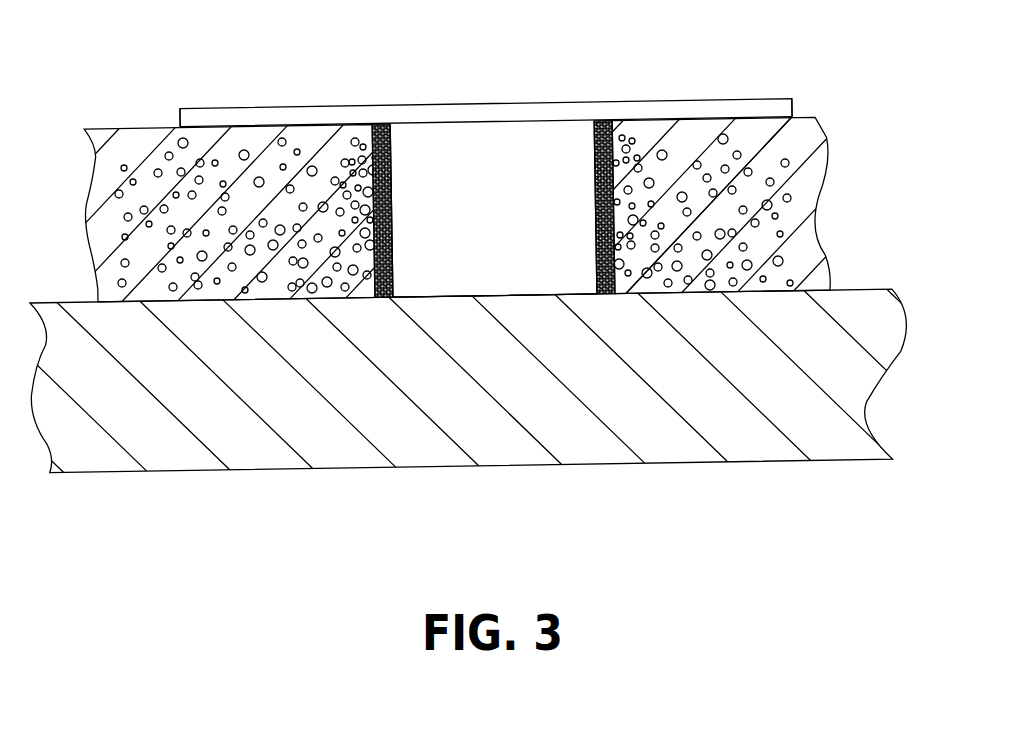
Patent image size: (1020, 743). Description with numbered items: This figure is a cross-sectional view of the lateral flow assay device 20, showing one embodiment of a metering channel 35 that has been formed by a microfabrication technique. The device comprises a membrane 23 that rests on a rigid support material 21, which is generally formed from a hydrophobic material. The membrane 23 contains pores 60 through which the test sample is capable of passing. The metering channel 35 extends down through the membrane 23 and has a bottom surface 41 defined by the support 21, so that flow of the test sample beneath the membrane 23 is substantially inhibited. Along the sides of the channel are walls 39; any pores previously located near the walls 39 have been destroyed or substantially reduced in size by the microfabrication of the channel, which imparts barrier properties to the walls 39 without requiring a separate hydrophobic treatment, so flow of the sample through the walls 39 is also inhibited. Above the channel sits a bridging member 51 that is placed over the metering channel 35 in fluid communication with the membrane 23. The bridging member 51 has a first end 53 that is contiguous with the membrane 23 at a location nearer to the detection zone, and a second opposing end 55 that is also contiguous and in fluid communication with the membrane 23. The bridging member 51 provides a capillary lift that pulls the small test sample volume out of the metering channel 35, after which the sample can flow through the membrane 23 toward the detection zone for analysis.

The lateral flow assay device 20 is at (510, 295).
The rigid support material 21 is at (820, 442).
The membrane 23 is at (142, 148).
The metering channel 35 is at (475, 150).
The walls 39 is at (395, 230).
The bottom surface 41 is at (485, 295).
The bridging member 51 is at (543, 110).
The first end 53 is at (183, 126).
The second opposing end 55 is at (795, 108).
The pores 60 is at (748, 172).